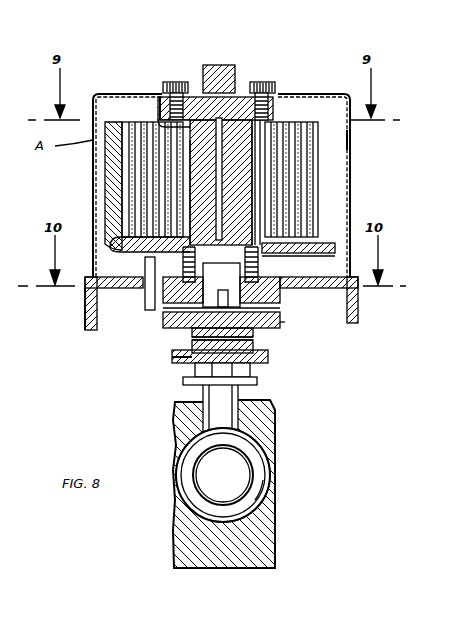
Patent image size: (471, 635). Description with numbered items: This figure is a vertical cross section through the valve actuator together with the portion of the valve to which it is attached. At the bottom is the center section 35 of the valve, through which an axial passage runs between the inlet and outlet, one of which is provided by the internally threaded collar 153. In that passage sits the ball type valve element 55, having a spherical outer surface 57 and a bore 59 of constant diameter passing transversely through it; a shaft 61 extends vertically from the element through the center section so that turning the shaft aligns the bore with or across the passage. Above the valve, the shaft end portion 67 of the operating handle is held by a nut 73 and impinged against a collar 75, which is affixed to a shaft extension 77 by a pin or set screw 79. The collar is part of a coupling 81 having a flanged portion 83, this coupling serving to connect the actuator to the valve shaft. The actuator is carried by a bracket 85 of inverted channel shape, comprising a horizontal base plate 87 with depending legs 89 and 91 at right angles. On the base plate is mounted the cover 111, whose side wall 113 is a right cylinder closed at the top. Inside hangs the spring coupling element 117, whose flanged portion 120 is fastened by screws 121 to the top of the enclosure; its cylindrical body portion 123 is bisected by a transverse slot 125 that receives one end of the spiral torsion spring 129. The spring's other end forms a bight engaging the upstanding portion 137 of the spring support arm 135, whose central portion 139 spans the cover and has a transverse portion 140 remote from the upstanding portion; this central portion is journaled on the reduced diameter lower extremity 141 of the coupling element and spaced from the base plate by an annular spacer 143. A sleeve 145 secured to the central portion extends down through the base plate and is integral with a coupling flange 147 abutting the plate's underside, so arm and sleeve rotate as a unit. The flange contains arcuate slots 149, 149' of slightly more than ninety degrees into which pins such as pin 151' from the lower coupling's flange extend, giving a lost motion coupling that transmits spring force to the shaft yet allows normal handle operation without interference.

The center section 35 is at (205, 570).
The ball type valve element 55 is at (260, 452).
The spherical outer surface 57 is at (243, 505).
The bore 59 is at (245, 478).
The shaft 61 is at (225, 400).
The shaft end portion of operating handle 67 is at (273, 358).
The nut 73 is at (197, 370).
The collar 75 is at (180, 357).
The shaft extension 77 is at (195, 385).
The pin or set screw 79 is at (195, 340).
The coupling 81 is at (252, 332).
The flanged portion 83 is at (160, 335).
The bracket 85 is at (85, 290).
The base plate 87 is at (146, 290).
The leg 89 is at (85, 312).
The leg 91 is at (358, 310).
The cover 111 is at (350, 196).
The side wall 113 is at (350, 136).
The spring coupling element 117 is at (212, 65).
The flanged portion 120 is at (163, 108).
The screws 121 is at (172, 82).
The cylindrical body portion 123 is at (235, 145).
The transverse slot 125 is at (158, 122).
The spiral torsion spring 129 is at (320, 172).
The spring support arm 135 is at (110, 257).
The upstanding portion 137 is at (108, 180).
The central portion 139 is at (310, 240).
The transverse portion 140 is at (310, 252).
The reduced diameter lower extremity 141 is at (221, 285).
The annular spacer 143 is at (283, 268).
The sleeve 145 is at (280, 285).
The coupling flange 147 is at (283, 315).
The arcuate slot 149 is at (151, 294).
The arcuate slot 149' is at (260, 327).
The pin 151' is at (301, 345).
The collar 153 is at (236, 67).